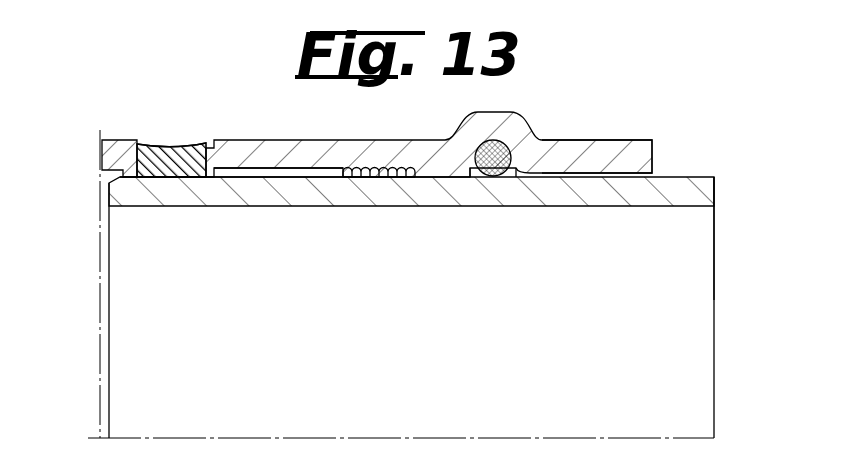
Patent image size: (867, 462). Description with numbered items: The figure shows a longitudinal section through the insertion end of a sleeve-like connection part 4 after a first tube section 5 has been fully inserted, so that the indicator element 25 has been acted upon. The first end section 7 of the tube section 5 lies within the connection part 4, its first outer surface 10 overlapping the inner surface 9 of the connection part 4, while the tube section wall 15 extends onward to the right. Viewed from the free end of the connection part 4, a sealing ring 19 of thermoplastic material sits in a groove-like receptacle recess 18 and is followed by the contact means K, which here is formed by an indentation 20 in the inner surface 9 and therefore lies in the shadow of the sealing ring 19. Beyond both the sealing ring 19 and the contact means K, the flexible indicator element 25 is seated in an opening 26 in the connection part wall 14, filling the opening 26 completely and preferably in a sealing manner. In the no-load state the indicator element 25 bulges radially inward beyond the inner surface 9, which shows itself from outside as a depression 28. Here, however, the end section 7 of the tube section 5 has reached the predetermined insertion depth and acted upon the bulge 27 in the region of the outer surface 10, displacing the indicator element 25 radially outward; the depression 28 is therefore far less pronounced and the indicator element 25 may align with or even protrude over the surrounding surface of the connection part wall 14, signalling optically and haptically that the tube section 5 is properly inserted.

The connection part 4 is at (222, 120).
The first tube section 5 is at (740, 184).
The first end section 7 is at (217, 193).
The inner surface 9 is at (293, 170).
The first outer surface 10 is at (248, 181).
The connection part wall 14 is at (598, 150).
The tube section wall 15 is at (650, 198).
The receptacle recess 18 is at (499, 139).
The sealing ring 19 is at (500, 158).
The indentation 20 is at (392, 171).
The contact means K is at (364, 168).
The indicator element 25 is at (172, 138).
The opening 26 is at (124, 153).
The bulge 27 is at (160, 178).
The depression 28 is at (158, 138).